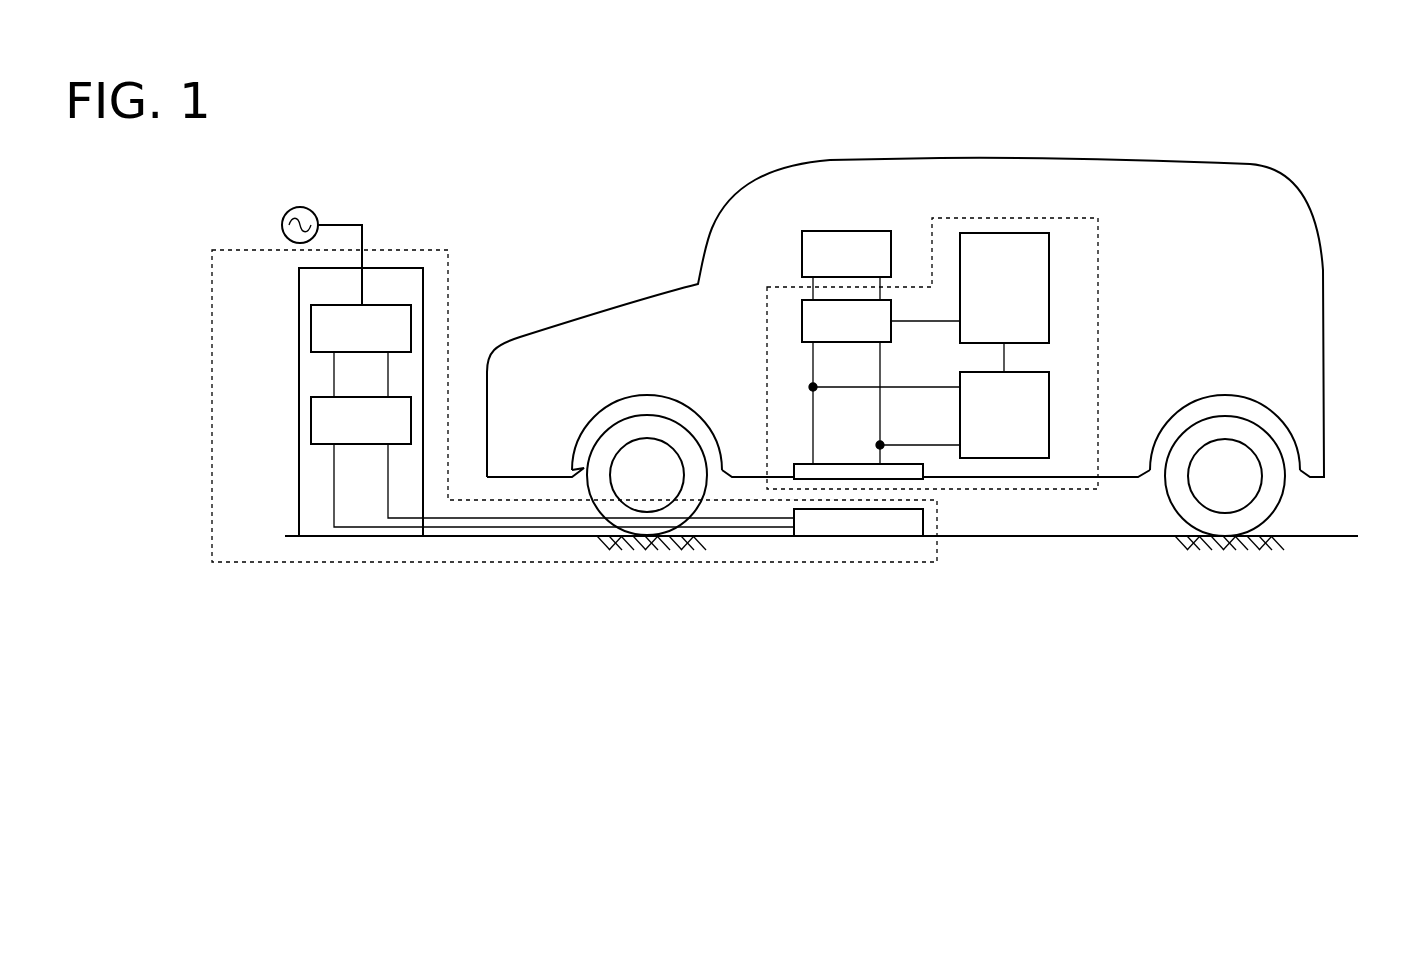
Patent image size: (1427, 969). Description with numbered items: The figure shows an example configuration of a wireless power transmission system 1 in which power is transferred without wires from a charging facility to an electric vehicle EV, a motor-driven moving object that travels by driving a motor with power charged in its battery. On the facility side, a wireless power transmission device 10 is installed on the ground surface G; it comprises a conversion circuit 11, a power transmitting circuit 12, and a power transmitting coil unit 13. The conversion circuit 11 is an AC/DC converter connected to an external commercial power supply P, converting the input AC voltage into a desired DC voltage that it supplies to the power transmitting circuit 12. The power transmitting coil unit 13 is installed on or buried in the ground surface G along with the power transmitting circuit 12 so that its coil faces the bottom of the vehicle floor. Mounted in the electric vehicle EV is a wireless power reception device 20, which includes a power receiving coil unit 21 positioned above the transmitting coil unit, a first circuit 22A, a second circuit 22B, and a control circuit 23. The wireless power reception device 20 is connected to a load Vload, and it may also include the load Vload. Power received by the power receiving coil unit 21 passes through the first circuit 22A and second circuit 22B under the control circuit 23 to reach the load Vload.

The wireless power transmission system 1 is at (583, 162).
The wireless power transmission device 10 is at (245, 250).
The conversion circuit 11 is at (311, 327).
The power transmitting circuit 12 is at (311, 419).
The power transmitting coil unit 13 is at (858, 531).
The wireless power reception device 20 is at (1099, 341).
The power receiving coil unit 21 is at (800, 462).
The first circuit 22A is at (802, 320).
The second circuit 22B is at (1049, 393).
The control circuit 23 is at (1049, 287).
The commercial power supply P is at (300, 207).
The electric vehicle EV is at (1322, 190).
The ground surface G is at (1325, 536).
The load Vload is at (877, 199).